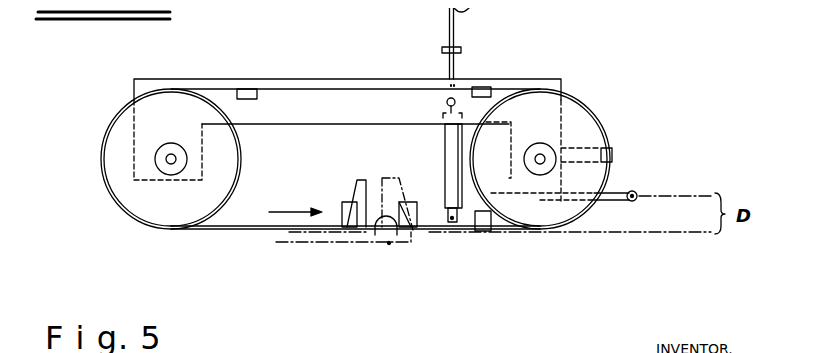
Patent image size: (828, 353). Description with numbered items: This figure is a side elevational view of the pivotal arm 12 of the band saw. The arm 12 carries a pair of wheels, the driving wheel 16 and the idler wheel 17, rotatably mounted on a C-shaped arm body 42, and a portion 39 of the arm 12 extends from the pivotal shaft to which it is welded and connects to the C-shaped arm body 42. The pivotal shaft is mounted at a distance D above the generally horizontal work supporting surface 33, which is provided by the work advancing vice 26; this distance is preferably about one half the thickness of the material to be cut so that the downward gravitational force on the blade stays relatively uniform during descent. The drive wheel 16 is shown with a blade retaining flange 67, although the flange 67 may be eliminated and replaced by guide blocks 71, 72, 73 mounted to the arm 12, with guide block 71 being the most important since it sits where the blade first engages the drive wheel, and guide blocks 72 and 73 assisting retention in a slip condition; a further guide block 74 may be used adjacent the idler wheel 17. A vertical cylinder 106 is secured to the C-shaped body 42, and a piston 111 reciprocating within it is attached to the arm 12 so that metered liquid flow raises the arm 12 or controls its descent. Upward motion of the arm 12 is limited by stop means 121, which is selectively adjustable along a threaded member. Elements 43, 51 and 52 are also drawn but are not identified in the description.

The arm 12 is at (516, 56).
The wheel 16 is at (582, 112).
The idler wheel 17 is at (158, 222).
The work advancing vice 26 is at (409, 182).
The work supporting surface 33 is at (390, 244).
The portion of arm 39 is at (625, 190).
The C-shaped arm body 42 is at (135, 155).
The frame 43 is at (373, 89).
The stop 51 is at (418, 207).
The pusher 52 is at (344, 205).
The flange 67 is at (576, 107).
The guide block 71 is at (483, 233).
The guide block 72 is at (615, 155).
The guide block 73 is at (485, 87).
The guide block 74 is at (253, 88).
The vertical cylinder 106 is at (445, 132).
The piston 111 is at (447, 105).
The stop means 121 is at (459, 46).